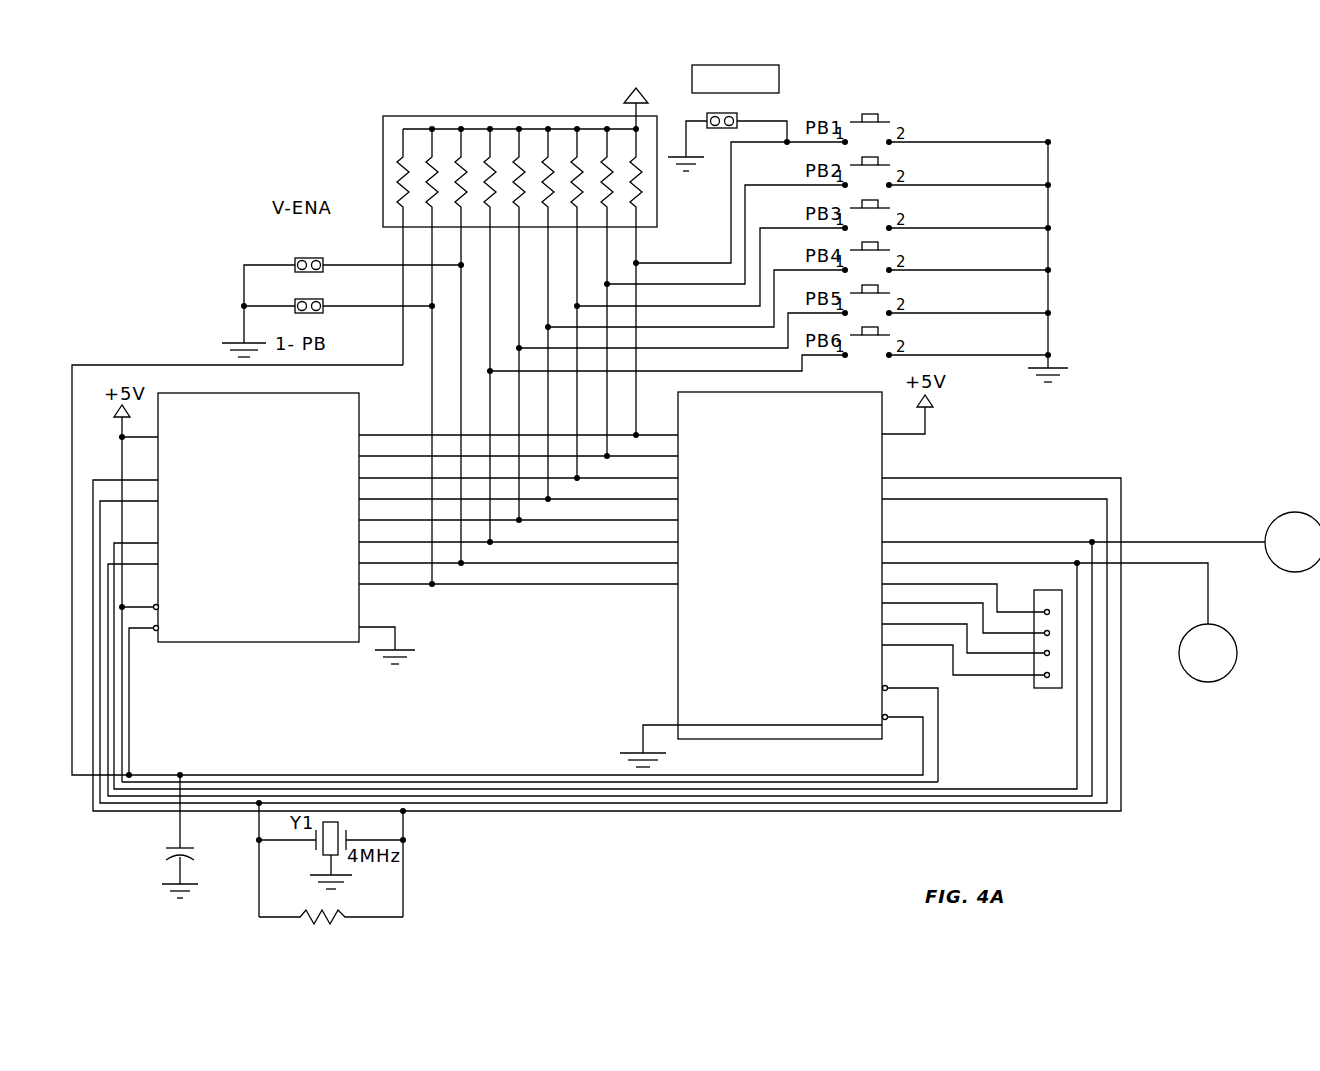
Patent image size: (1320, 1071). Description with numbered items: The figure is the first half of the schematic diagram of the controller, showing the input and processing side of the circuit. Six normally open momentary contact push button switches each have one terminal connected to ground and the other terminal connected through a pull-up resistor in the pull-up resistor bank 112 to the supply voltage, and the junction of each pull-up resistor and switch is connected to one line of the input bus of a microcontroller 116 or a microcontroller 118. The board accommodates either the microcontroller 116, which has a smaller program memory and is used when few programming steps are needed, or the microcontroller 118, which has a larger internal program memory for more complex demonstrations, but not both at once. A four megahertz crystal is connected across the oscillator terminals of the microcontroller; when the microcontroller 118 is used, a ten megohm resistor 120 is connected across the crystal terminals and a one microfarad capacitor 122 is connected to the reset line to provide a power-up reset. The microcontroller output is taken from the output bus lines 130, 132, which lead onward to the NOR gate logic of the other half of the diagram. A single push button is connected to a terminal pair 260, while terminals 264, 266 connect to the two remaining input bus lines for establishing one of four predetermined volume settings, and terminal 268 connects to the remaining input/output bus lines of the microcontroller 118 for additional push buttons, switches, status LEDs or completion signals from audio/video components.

The pull-up resistor bank 112 is at (383, 135).
The terminal pair 260 is at (725, 130).
The set of electrical terminals 264 is at (295, 265).
The set of electrical terminals 266 is at (323, 310).
The microcontroller 116 is at (298, 642).
The microcontroller 118 is at (678, 622).
The output bus line 130 is at (962, 542).
The output bus line 132 is at (1022, 563).
The set of electrical terminals 268 is at (1048, 690).
The capacitor 122 is at (184, 857).
The resistor 120 is at (350, 917).